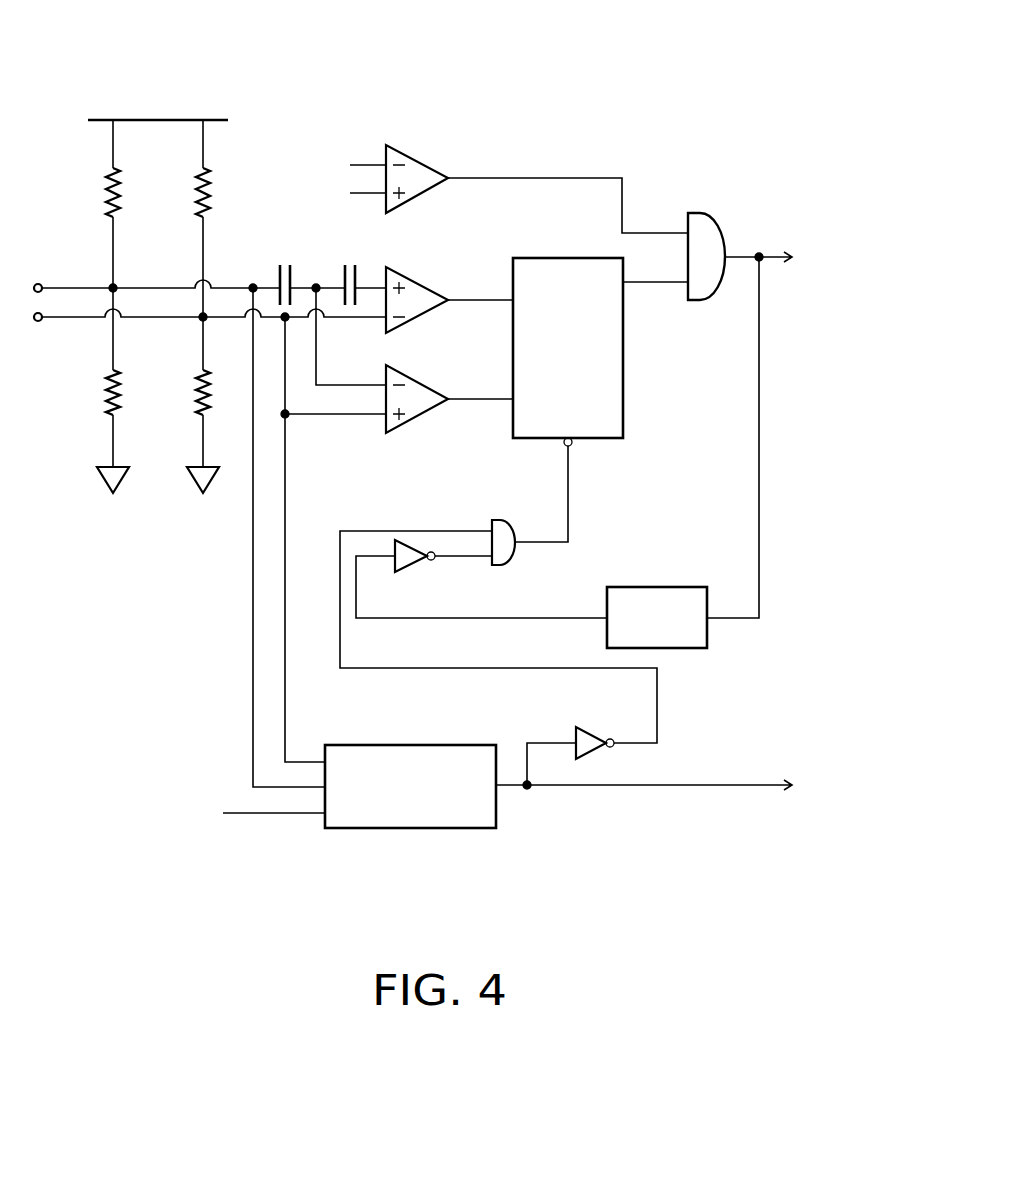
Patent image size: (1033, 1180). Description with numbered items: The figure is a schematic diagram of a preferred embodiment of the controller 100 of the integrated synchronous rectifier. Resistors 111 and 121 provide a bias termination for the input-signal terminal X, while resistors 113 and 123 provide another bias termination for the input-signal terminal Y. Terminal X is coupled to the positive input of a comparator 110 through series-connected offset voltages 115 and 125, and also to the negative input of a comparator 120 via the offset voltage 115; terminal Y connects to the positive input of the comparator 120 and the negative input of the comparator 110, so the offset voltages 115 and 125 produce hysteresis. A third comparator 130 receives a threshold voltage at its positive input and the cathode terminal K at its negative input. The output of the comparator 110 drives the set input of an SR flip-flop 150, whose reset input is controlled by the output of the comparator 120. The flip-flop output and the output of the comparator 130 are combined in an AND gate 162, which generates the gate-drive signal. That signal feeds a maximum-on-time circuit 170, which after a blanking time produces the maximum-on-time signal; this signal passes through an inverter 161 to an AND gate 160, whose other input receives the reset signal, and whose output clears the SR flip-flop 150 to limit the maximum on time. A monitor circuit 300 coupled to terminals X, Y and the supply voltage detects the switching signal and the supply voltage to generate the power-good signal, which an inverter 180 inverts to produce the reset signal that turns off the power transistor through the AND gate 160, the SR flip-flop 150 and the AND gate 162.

The controller 100 is at (803, 32).
The comparator 110 is at (417, 284).
The resistor 111 is at (108, 197).
The resistor 113 is at (198, 197).
The offset voltage 115 is at (278, 273).
The comparator 120 is at (417, 382).
The resistor 121 is at (108, 398).
The resistor 123 is at (198, 398).
The offset voltage 125 is at (343, 273).
The third comparator 130 is at (417, 162).
The SR flip-flop 150 is at (624, 347).
The AND gate 160 is at (505, 523).
The inverter 161 is at (412, 566).
The AND gate 162 is at (712, 226).
The maximum-on-time circuit 170 is at (657, 587).
The inverter 180 is at (612, 716).
The monitor circuit 300 is at (398, 830).